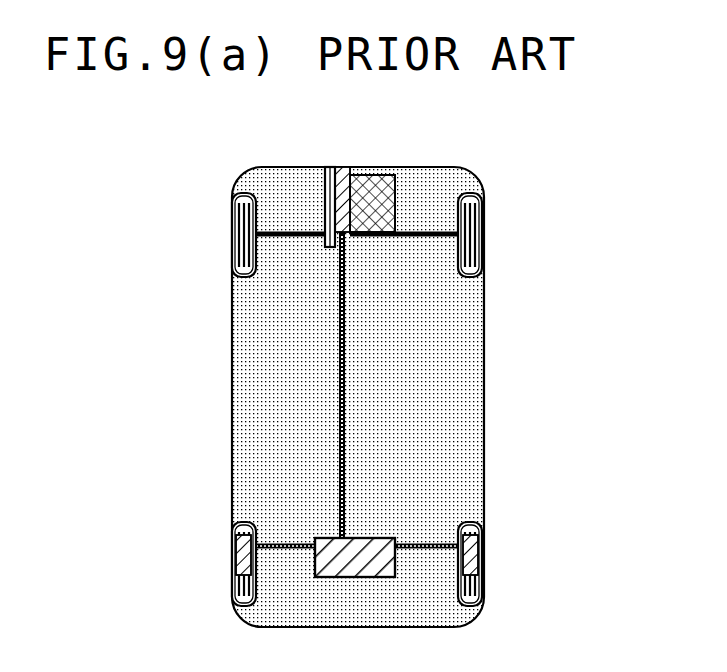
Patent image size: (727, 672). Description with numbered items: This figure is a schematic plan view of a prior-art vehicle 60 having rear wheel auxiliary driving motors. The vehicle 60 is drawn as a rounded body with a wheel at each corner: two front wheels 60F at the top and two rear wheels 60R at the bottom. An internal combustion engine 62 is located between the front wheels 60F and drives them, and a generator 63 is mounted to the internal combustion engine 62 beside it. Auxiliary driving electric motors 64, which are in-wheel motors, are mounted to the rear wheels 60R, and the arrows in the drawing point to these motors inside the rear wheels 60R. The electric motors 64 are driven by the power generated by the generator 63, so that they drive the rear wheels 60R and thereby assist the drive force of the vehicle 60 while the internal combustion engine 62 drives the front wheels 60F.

The vehicle 60 is at (437, 190).
The front wheels 60F is at (235, 248).
The rear wheels 60R is at (232, 528).
The internal combustion engine 62 is at (390, 177).
The generator 63 is at (345, 172).
The auxiliary driving electric motors 64 is at (240, 556).